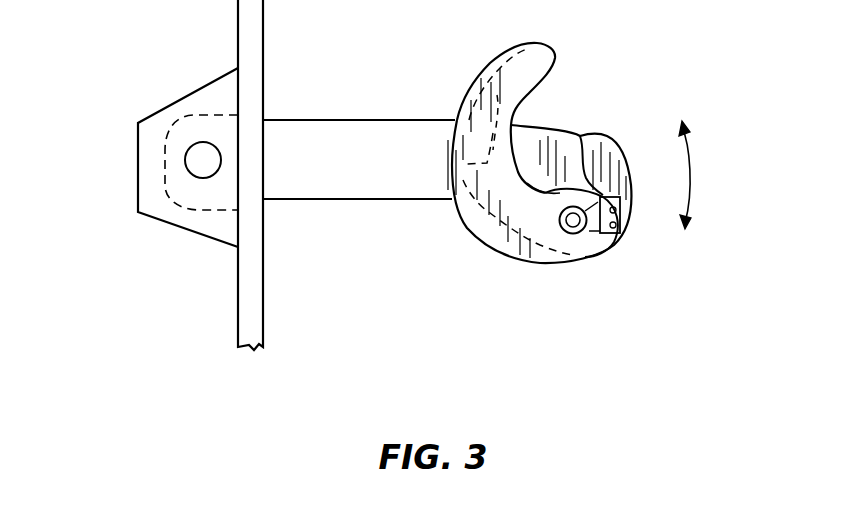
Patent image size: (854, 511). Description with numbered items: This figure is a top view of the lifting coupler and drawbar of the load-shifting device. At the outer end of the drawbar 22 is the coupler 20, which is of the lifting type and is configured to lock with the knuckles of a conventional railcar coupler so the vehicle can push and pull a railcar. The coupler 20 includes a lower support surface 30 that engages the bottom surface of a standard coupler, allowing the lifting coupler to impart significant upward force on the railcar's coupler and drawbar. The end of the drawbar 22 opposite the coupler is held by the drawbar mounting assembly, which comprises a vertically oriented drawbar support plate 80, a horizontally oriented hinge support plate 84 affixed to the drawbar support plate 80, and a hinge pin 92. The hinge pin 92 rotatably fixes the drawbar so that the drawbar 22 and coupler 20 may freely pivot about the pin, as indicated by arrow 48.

The coupler 20 is at (513, 277).
The drawbar 22 is at (345, 138).
The lower support surface 30 is at (560, 143).
The arrow 48 is at (692, 170).
The drawbar support plate 80 is at (257, 315).
The hinge support plate 84 is at (157, 205).
The hinge pin 92 is at (185, 160).